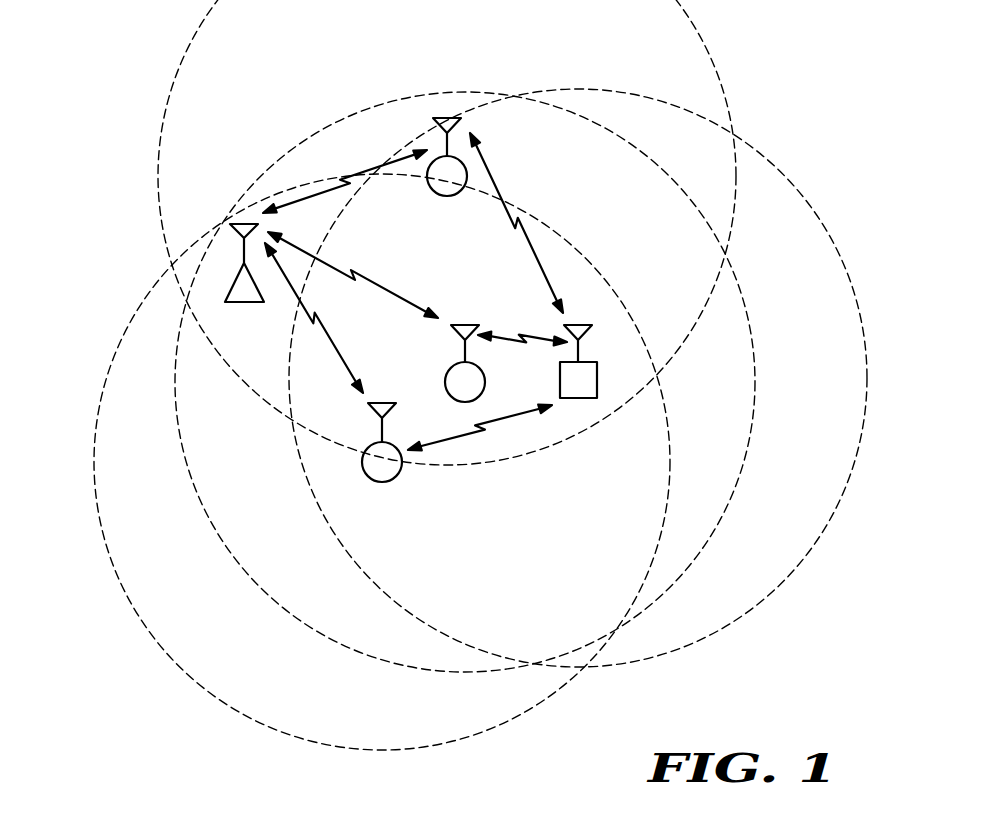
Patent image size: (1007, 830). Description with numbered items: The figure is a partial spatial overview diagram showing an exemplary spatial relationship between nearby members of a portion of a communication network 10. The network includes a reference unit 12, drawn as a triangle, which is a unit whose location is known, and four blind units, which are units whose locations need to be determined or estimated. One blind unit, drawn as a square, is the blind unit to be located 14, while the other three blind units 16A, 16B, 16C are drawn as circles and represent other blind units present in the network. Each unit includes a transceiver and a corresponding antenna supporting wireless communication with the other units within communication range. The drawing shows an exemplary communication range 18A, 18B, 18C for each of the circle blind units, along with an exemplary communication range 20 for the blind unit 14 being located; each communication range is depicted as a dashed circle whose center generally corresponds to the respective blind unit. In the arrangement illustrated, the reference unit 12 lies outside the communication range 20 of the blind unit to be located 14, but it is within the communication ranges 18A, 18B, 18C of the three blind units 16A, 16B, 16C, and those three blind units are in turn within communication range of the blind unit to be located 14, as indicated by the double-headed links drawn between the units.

The communication network 10 is at (129, 234).
The reference unit 12 is at (244, 303).
The blind unit to be located 14 is at (560, 375).
The blind unit 16A is at (446, 197).
The blind unit 16B is at (445, 381).
The blind unit 16C is at (397, 477).
The communication range 18A is at (510, 458).
The communication range 18B is at (277, 602).
The communication range 18C is at (187, 672).
The communication range 20 is at (348, 556).